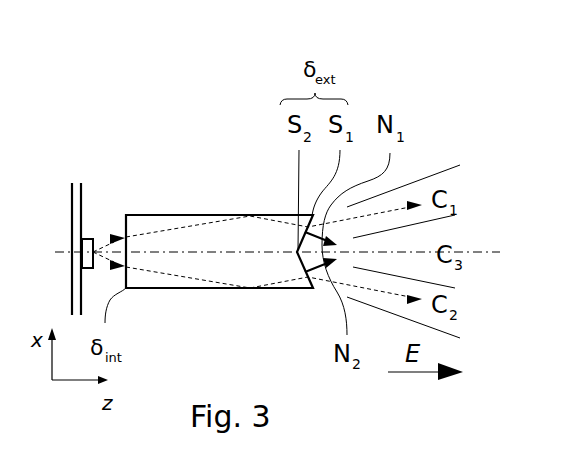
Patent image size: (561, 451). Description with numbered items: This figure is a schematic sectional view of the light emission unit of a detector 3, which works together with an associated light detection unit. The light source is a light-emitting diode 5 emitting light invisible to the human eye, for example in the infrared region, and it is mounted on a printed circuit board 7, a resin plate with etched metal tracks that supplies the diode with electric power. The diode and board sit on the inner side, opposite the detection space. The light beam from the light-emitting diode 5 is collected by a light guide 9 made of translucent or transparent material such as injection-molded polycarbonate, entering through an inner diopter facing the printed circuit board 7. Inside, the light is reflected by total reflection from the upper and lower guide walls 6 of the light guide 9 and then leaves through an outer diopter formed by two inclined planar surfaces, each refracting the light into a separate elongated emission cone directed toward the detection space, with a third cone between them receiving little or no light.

The detector 3 is at (120, 88).
The light-emitting diode 5 is at (88, 239).
The guide walls 6 is at (150, 215).
The printed circuit board 7 is at (72, 223).
The light guide 9 is at (218, 185).